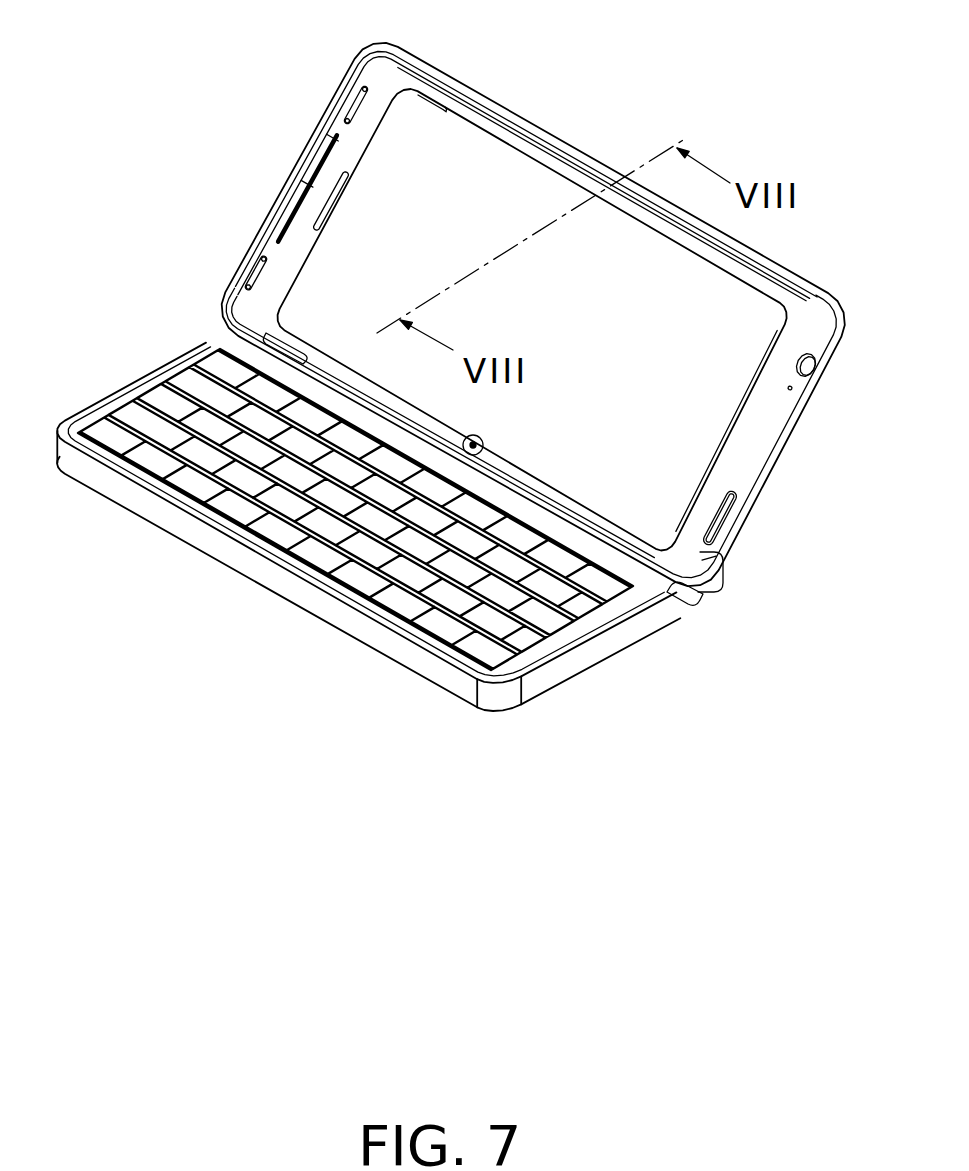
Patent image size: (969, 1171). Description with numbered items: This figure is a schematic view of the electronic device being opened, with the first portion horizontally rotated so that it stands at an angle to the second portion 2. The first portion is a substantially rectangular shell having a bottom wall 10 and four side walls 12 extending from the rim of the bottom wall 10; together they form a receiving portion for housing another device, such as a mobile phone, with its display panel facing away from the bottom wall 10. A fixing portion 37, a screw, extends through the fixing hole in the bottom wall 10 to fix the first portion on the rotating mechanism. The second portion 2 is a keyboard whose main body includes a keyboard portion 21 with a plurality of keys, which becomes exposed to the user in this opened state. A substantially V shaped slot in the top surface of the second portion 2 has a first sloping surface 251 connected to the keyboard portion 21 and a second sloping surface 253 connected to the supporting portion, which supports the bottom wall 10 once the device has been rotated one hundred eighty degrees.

The second portion 2 is at (573, 666).
The bottom wall 10 is at (532, 138).
The side walls 12 is at (786, 407).
The keyboard portion 21 is at (160, 402).
The fixing portion 37 is at (485, 443).
The first sloping surface 251 is at (690, 606).
The second sloping surface 253 is at (708, 580).